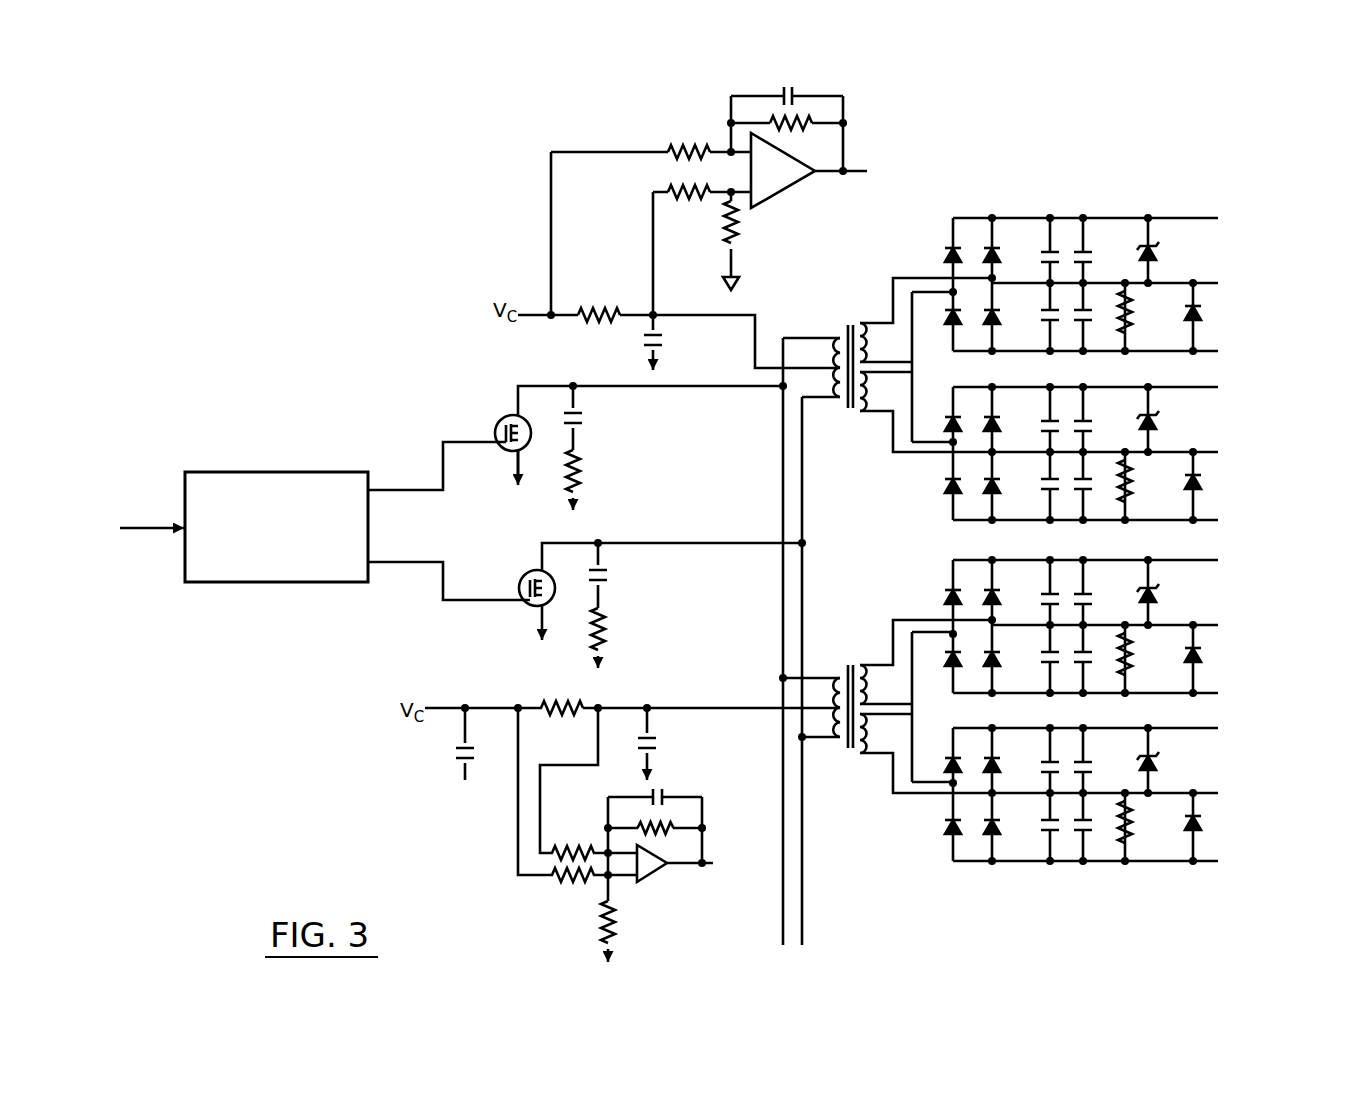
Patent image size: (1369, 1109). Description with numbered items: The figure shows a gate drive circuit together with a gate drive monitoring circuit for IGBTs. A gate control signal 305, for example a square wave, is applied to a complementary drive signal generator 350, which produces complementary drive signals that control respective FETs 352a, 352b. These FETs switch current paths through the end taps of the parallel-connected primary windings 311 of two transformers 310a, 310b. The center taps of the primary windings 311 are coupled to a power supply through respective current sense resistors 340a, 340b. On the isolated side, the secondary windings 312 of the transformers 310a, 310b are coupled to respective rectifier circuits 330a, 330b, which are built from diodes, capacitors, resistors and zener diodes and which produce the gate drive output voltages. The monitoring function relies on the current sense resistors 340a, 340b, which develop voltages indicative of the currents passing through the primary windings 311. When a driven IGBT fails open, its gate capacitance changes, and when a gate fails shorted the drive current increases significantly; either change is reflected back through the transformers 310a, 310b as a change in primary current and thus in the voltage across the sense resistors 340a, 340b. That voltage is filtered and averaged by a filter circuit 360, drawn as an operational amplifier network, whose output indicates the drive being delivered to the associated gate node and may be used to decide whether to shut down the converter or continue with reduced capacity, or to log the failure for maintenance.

The gate control signal 305 is at (155, 522).
The complementary drive signal generator 350 is at (280, 472).
The FET 352a is at (492, 430).
The FET 352b is at (518, 585).
The current sense resistor 340a is at (598, 292).
The current sense resistor 340b is at (551, 693).
The filter circuit 360 is at (805, 203).
The transformer 310a is at (851, 318).
The transformer 310b is at (848, 660).
The primary winding 311 is at (832, 382).
The secondary winding 312 is at (868, 342).
The rectifier circuit 330a is at (1270, 212).
The rectifier circuit 330b is at (1270, 555).